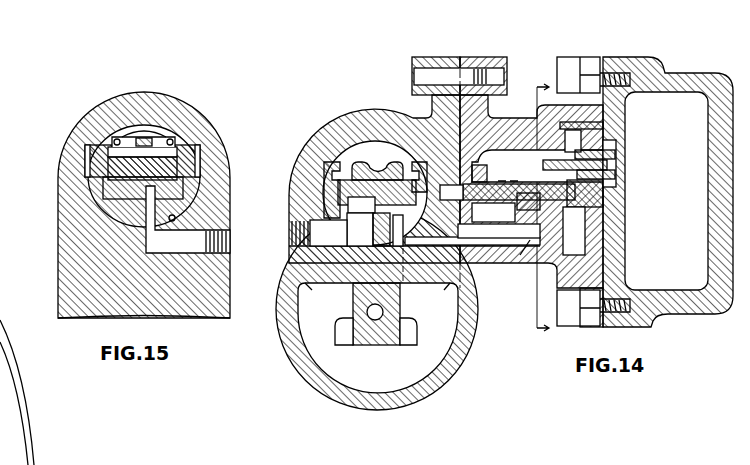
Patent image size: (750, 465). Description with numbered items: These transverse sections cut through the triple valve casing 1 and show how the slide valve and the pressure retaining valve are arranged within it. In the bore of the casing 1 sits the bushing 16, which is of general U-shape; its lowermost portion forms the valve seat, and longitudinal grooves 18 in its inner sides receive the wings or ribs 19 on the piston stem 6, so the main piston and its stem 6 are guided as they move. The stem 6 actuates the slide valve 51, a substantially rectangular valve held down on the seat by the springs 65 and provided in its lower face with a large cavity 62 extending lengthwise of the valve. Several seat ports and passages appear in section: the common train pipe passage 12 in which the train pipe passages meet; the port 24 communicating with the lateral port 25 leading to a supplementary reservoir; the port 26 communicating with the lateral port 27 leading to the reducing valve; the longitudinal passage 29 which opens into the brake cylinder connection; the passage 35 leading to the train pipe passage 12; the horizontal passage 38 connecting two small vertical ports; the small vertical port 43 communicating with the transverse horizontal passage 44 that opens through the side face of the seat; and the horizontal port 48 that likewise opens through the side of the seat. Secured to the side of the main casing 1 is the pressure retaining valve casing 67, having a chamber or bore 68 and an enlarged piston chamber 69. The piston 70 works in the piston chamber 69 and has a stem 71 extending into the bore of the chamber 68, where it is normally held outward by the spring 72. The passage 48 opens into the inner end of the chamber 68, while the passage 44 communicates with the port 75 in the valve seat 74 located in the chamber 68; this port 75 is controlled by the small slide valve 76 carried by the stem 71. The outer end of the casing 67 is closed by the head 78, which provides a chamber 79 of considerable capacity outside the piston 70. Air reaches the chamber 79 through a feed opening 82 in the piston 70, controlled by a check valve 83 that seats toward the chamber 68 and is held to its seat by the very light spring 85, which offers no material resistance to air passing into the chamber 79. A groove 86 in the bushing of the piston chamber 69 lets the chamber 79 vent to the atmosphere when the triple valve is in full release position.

In FIG. 15, the casing 1 is at (152, 130).
In FIG. 14, the casing 1 is at (360, 122).
In FIG. 14, the stem 6 is at (372, 164).
In FIG. 14, the common passage 12 is at (377, 309).
In FIG. 14, the bushing 16 is at (330, 185).
In FIG. 14, the longitudinal grooves 18 is at (326, 168).
In FIG. 15, the wings or ribs 19 is at (92, 158).
In FIG. 15, the port 24 is at (150, 210).
In FIG. 15, the lateral port 25 is at (188, 219).
In FIG. 14, the port 26 is at (375, 229).
In FIG. 14, the lateral port 27 is at (319, 233).
In FIG. 14, the longitudinal passage 29 is at (374, 312).
In FIG. 14, the passage 35 is at (424, 288).
In FIG. 15, the horizontal passage 38 is at (176, 220).
In FIG. 14, the small vertical port 43 is at (340, 288).
In FIG. 14, the transverse horizontal passage 44 is at (500, 252).
In FIG. 14, the horizontal port 48 is at (440, 240).
In FIG. 14, the slide valve 51 is at (340, 212).
In FIG. 14, the large cavity 62 is at (361, 205).
In FIG. 15, the springs 65 is at (154, 132).
In FIG. 14, the pressure retaining valve casing 67 is at (490, 120).
In FIG. 14, the chamber or bore 68 is at (537, 166).
In FIG. 14, the enlarged piston chamber 69 is at (574, 140).
In FIG. 14, the piston 70 is at (604, 224).
In FIG. 14, the stem 71 is at (507, 203).
In FIG. 14, the spring 72 is at (517, 170).
In FIG. 14, the valve seat 74 is at (574, 231).
In FIG. 14, the port 75 is at (517, 262).
In FIG. 14, the small slide valve 76 is at (540, 198).
In FIG. 14, the head 78 is at (688, 80).
In FIG. 14, the chamber 79 is at (666, 191).
In FIG. 14, the feed opening 82 is at (616, 174).
In FIG. 14, the check valve 83 is at (616, 156).
In FIG. 14, the spring 85 is at (604, 196).
In FIG. 14, the groove 86 is at (604, 123).